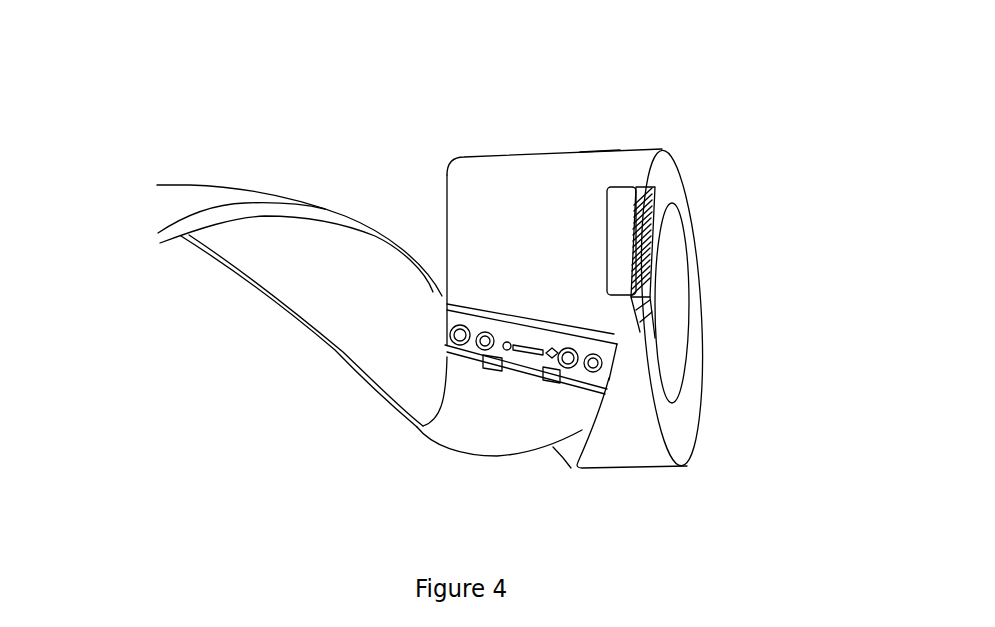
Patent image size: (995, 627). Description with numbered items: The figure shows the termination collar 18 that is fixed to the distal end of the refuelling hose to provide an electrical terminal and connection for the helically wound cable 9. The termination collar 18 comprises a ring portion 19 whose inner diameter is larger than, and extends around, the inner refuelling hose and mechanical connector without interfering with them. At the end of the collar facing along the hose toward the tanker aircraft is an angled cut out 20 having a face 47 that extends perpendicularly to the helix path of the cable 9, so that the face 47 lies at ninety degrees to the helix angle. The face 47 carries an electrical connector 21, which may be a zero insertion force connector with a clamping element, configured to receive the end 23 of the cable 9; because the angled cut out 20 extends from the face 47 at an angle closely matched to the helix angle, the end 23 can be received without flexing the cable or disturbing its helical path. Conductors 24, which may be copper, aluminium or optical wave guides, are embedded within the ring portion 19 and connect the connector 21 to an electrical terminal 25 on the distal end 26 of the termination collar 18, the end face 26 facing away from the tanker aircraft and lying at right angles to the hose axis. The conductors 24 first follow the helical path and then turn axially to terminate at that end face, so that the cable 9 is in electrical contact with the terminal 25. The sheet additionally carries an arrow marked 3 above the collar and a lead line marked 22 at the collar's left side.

The viewing direction arrow 3 is at (597, 110).
The cable 9 is at (197, 205).
The termination collar 18 is at (538, 162).
The ring portion 19 is at (663, 195).
The angled cut out 20 is at (573, 452).
The electrical connector 21 is at (452, 325).
The housing body 22 is at (447, 207).
The end of the cable 23 is at (453, 358).
The conductors 24 is at (549, 372).
The electrical terminal 25 is at (650, 248).
The distal end 26 is at (670, 444).
The face 47 is at (450, 307).